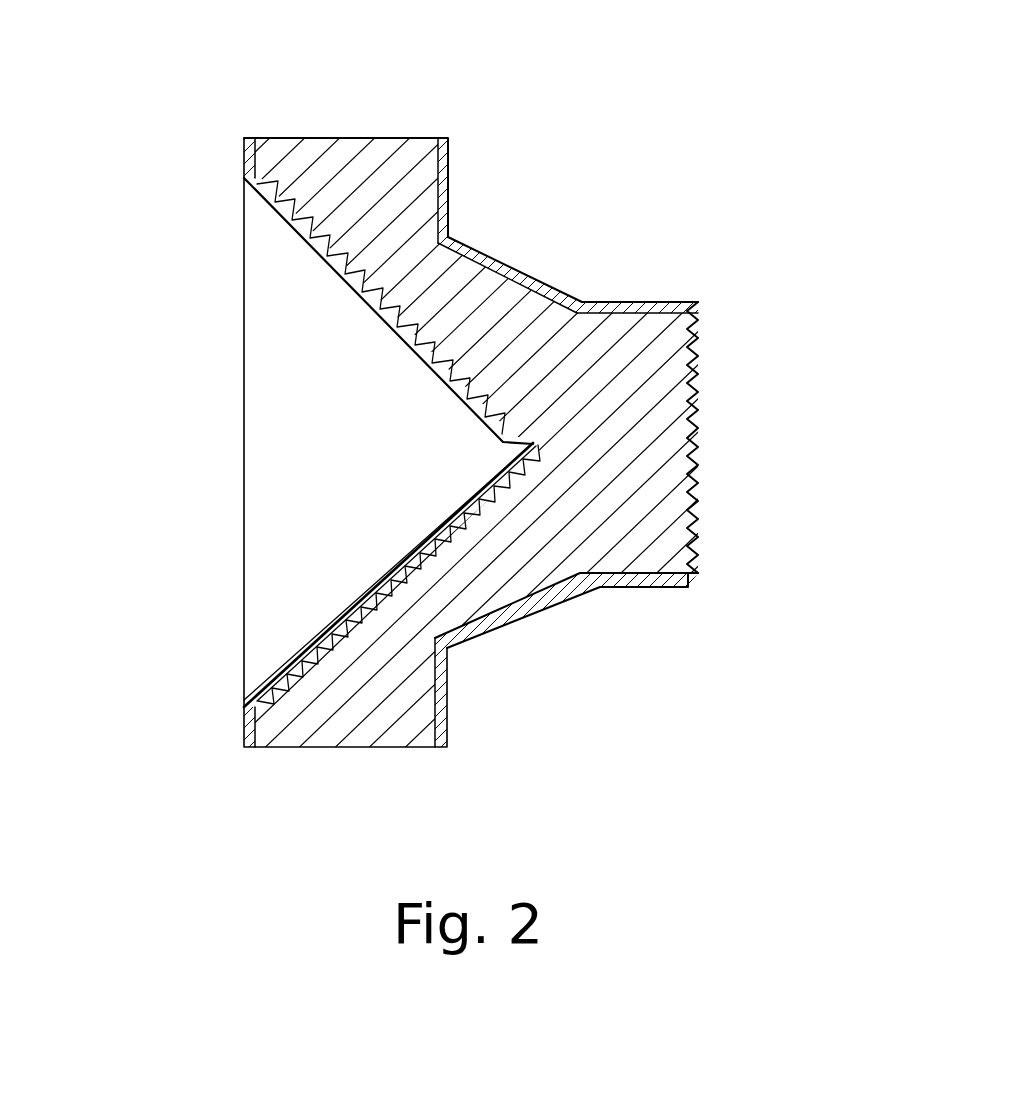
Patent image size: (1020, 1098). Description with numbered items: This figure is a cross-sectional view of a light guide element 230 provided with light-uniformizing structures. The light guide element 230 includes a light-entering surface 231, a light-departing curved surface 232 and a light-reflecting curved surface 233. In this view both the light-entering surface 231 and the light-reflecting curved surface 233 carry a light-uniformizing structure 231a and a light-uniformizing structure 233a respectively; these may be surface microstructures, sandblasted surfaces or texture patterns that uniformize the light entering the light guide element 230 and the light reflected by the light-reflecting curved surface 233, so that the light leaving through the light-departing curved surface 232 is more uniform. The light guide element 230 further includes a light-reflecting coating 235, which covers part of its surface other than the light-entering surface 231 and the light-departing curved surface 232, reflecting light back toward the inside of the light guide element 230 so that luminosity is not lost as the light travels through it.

The light guide element 230 is at (510, 384).
The light-entering surface 231 is at (667, 475).
The light-uniformizing structure 231a is at (698, 418).
The light-departing curved surface 232 is at (393, 137).
The light-reflecting curved surface 233 is at (285, 575).
The light-uniformizing structure 233a is at (407, 553).
The light-reflecting coating 235 is at (513, 267).